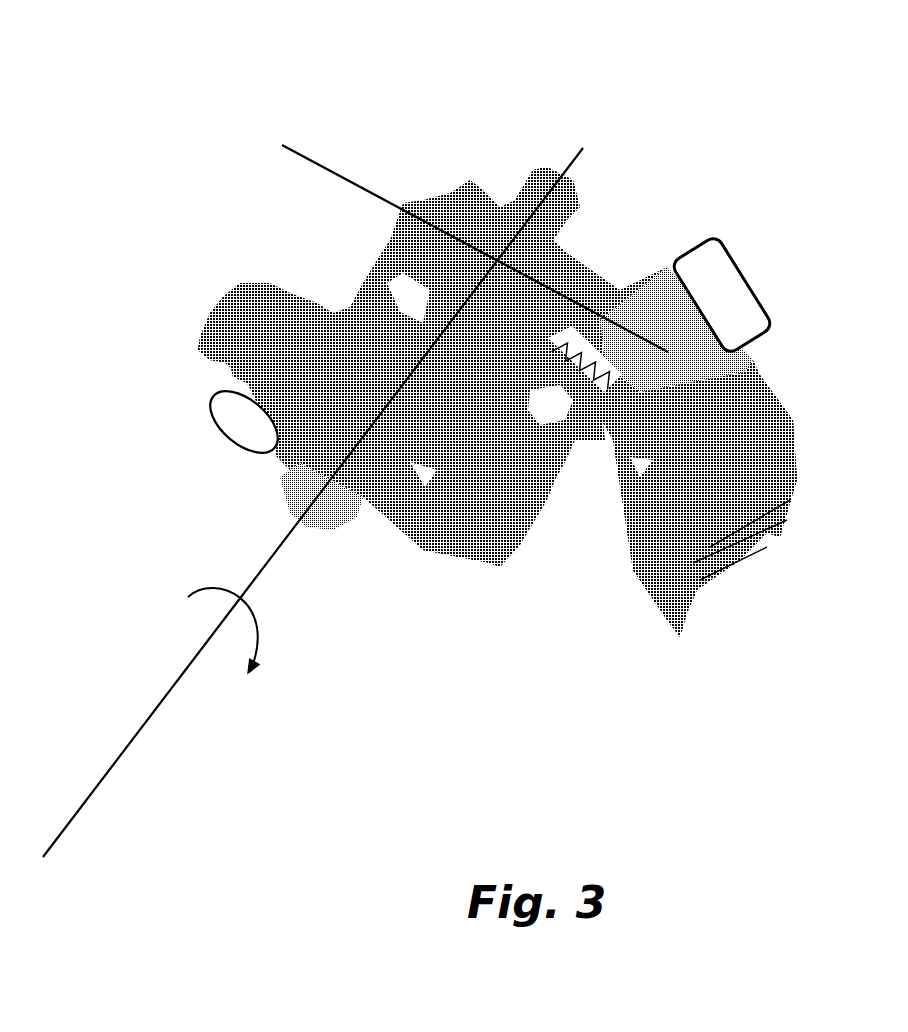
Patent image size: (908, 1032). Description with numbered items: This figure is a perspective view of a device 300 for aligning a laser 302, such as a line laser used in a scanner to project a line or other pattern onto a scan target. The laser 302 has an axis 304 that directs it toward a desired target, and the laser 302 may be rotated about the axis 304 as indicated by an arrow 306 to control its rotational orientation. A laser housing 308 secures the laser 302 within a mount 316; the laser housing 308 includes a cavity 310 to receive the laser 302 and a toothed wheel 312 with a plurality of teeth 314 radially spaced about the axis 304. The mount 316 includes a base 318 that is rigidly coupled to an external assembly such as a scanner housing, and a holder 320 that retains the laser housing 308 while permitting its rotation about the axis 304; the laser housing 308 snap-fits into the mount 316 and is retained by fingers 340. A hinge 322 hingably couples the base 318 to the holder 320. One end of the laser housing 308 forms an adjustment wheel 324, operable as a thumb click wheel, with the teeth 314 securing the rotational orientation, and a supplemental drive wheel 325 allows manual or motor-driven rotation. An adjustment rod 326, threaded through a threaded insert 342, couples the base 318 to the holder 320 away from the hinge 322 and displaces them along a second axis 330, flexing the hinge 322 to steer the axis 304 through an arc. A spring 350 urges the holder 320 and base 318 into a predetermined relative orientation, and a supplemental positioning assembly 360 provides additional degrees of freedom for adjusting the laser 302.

The device 300 is at (62, 150).
The laser 302 is at (287, 487).
The axis 304 is at (137, 737).
The arrow 306 is at (268, 625).
The laser housing 308 is at (527, 180).
The cavity 310 is at (334, 494).
The toothed wheel 312 is at (435, 537).
The teeth 314 is at (303, 300).
The mount 316 is at (777, 427).
The base 318 is at (767, 530).
The holder 320 is at (353, 275).
The hinge 322 is at (567, 472).
The adjustment wheel 324 is at (230, 358).
The supplemental drive wheel 325 is at (227, 432).
The adjustment rod 326 is at (617, 307).
The second axis 330 is at (330, 160).
The fingers 340 is at (213, 318).
The threaded insert 342 is at (585, 278).
The spring 350 is at (577, 387).
The supplemental positioning assembly 360 is at (743, 275).